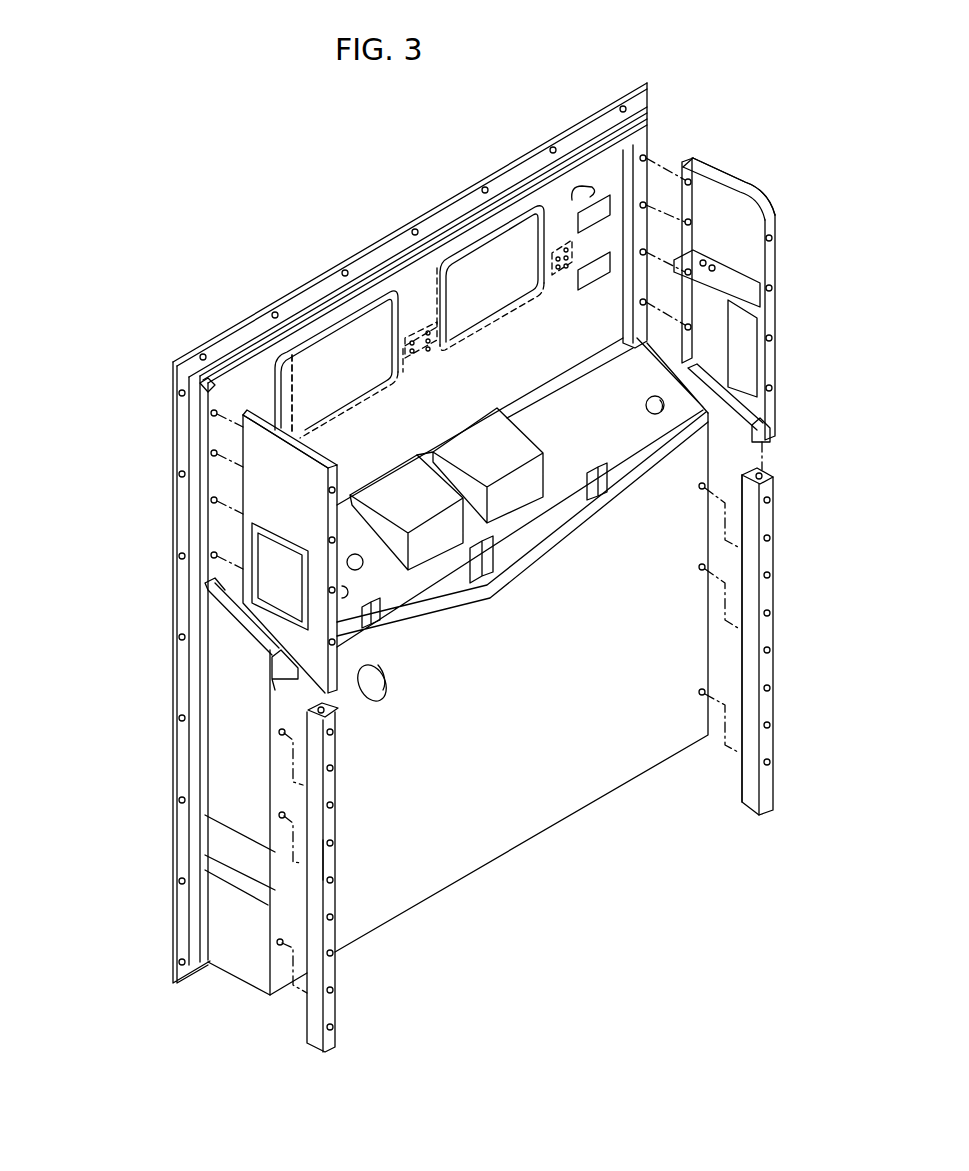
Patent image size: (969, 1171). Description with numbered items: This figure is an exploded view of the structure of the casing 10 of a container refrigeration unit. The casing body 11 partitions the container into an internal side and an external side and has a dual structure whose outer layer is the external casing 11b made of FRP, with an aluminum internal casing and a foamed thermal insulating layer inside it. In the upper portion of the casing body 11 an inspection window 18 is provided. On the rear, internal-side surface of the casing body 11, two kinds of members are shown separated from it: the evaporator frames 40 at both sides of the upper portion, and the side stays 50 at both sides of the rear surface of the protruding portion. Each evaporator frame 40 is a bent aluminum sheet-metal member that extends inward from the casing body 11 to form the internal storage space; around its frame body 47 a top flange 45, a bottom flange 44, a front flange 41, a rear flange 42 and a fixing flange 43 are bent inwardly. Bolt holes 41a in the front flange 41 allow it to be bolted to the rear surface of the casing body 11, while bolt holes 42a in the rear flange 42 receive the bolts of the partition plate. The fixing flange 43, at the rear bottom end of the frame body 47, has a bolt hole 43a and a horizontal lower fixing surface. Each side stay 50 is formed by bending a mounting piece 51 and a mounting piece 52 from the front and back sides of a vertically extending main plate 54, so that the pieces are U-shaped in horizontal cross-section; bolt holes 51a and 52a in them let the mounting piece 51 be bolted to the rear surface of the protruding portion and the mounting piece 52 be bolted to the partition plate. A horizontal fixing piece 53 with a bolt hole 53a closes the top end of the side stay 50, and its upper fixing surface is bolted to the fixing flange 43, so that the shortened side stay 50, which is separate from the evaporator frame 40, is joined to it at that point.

The casing 10 is at (130, 355).
The casing body 11 is at (169, 464).
The external casing 11b is at (537, 782).
The inspection window 18 is at (336, 353).
The evaporator frame 40 is at (326, 454).
The front flange 41 is at (691, 198).
The bolt holes 41a is at (684, 172).
The rear flange 42 is at (328, 515).
The bolt holes 42a is at (328, 486).
The fixing flange 43 is at (768, 438).
The bolt hole 43a is at (767, 425).
The bottom flange 44 is at (708, 385).
The top flange 45 is at (297, 432).
The frame body 47 is at (267, 442).
The side stay 50 is at (316, 1046).
The mounting piece 51 is at (740, 660).
The bolt holes 51a is at (742, 625).
The mounting piece 52 is at (330, 972).
The bolt holes 52a is at (335, 1026).
The fixing piece 53 is at (333, 716).
The bolt hole 53a is at (320, 710).
The main plate 54 is at (318, 863).